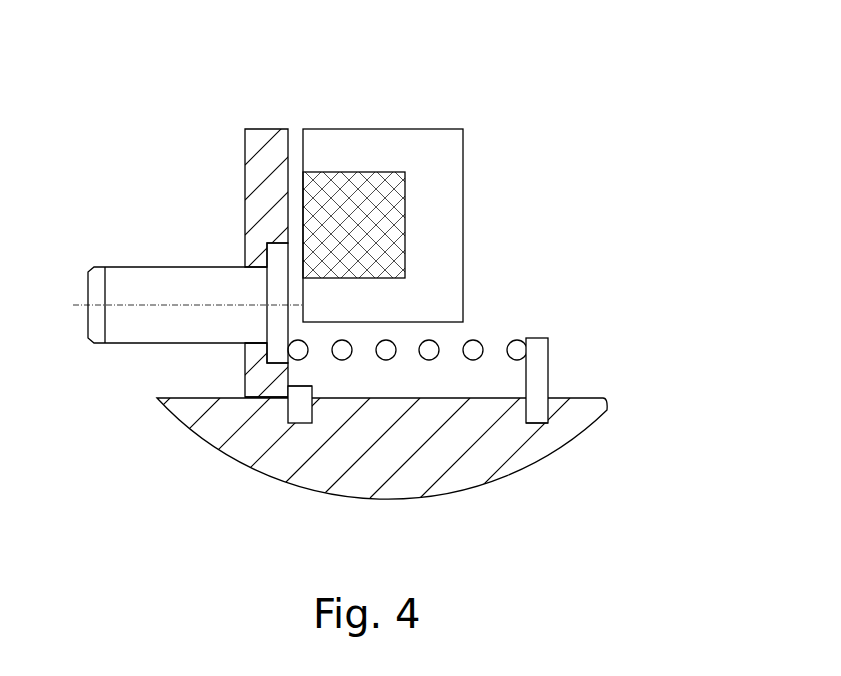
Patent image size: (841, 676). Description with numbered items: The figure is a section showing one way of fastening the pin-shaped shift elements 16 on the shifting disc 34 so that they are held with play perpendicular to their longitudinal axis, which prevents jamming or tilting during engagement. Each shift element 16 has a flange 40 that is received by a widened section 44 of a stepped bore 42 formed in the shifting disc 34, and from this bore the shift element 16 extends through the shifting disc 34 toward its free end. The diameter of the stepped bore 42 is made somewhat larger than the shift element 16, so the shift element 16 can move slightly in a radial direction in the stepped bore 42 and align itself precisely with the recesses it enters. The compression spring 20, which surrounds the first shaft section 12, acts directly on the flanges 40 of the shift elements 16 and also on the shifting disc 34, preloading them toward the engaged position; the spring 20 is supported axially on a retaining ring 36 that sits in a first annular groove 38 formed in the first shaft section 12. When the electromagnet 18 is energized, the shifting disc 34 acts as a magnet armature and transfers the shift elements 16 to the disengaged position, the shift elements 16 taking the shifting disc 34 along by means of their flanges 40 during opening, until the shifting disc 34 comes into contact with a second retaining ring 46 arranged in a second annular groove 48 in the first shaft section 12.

The first shaft section 12 is at (423, 467).
The shift element 16 is at (150, 283).
The electromagnet 18 is at (435, 158).
The compression spring 20 is at (475, 340).
The shifting disc 34 is at (268, 143).
The retaining ring 36 is at (537, 347).
The first annular groove 38 is at (525, 423).
The flange 40 is at (278, 253).
The stepped bore 42 is at (245, 347).
The widened section 44 is at (277, 383).
The second retaining ring 46 is at (297, 423).
The second annular groove 48 is at (297, 387).